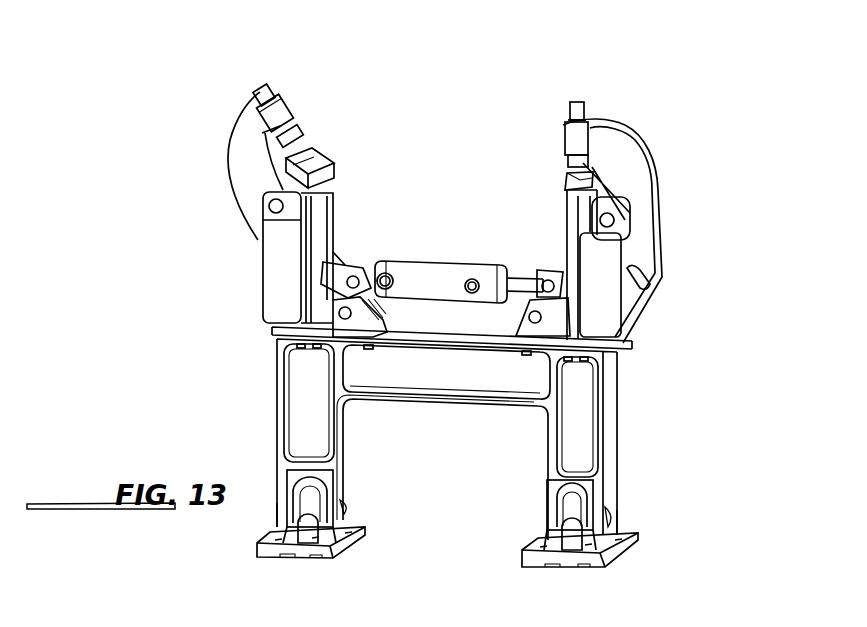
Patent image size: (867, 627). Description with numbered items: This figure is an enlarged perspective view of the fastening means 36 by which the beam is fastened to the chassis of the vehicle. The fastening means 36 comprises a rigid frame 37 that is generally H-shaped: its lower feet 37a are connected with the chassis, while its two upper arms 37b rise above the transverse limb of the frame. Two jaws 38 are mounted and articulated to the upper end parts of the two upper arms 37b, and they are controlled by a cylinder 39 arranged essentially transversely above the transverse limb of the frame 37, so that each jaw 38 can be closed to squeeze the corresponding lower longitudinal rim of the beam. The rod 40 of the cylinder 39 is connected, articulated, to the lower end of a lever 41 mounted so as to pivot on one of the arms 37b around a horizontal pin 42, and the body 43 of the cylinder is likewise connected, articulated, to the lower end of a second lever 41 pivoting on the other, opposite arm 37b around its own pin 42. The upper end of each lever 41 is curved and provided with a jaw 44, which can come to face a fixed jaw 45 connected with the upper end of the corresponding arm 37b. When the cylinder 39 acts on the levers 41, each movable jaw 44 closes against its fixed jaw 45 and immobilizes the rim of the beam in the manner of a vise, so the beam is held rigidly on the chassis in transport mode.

The fastening means 36 is at (268, 387).
The rigid frame 37 is at (287, 438).
The lower feet 37a is at (347, 537).
The upper arms 37b is at (270, 282).
The jaws 38 is at (314, 132).
The cylinder 39 is at (446, 260).
The rod 40 is at (527, 282).
The lever 41 is at (238, 150).
The horizontal pin 42 is at (620, 195).
The body 43 is at (412, 280).
The jaw 44 is at (302, 133).
The fixed jaw 45 is at (308, 131).